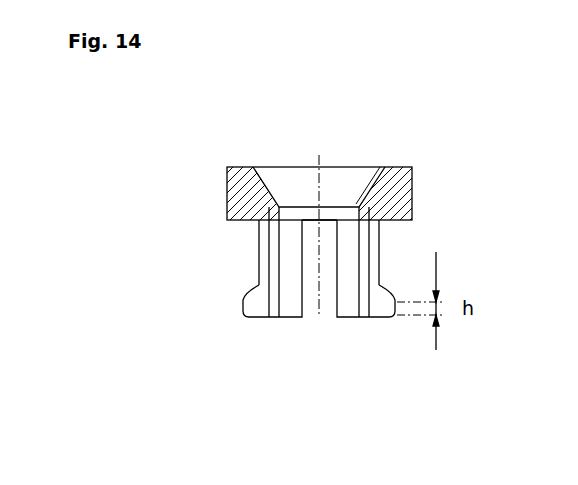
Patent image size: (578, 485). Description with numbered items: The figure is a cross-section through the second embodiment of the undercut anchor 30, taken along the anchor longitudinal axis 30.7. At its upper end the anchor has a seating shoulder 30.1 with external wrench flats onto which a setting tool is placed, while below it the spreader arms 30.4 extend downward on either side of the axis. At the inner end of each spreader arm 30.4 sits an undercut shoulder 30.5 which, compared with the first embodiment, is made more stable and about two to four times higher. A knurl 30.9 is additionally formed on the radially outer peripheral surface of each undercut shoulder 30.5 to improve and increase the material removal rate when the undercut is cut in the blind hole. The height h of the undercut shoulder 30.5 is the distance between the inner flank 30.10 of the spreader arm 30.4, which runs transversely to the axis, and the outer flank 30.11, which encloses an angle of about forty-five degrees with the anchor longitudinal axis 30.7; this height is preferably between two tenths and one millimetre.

The undercut anchor 30 is at (431, 139).
The seating shoulder 30.1 is at (228, 220).
The spreader arm 30.4 is at (259, 262).
The undercut shoulder 30.5 is at (254, 305).
The anchor longitudinal axis 30.7 is at (317, 317).
The knurl 30.9 is at (242, 307).
The inner flank 30.10 is at (436, 350).
The outer flank 30.11 is at (396, 297).